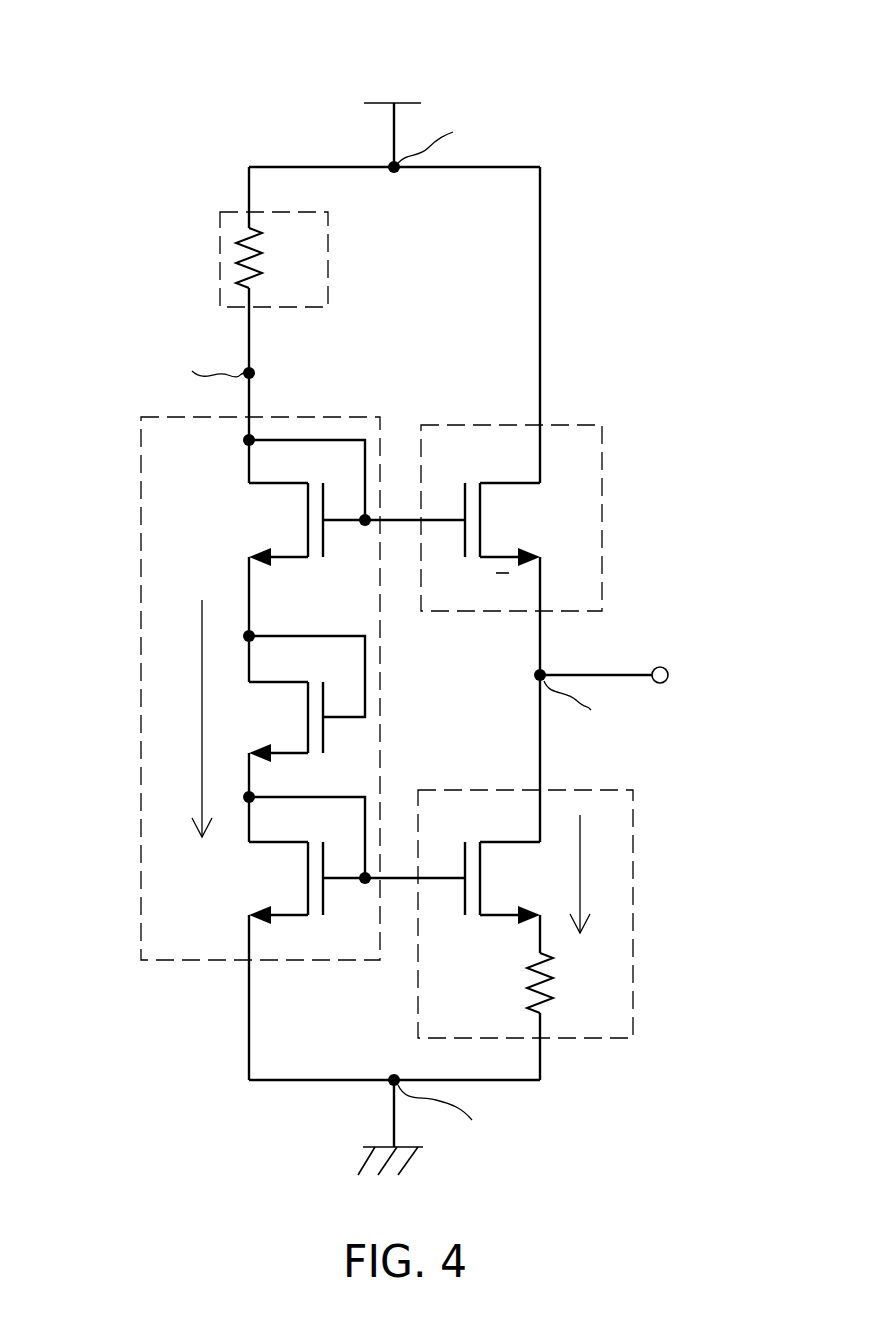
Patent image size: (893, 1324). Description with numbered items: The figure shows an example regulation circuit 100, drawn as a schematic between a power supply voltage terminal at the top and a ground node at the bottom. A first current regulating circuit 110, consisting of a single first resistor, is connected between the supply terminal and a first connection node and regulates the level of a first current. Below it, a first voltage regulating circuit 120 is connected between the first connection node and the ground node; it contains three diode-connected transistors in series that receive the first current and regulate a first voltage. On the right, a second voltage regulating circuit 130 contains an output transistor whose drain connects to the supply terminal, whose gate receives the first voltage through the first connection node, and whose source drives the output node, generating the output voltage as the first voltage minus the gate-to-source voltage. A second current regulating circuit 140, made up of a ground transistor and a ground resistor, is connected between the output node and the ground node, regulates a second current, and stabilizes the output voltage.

The regulation circuit 100 is at (416, 26).
The first current regulating circuit 110 is at (220, 258).
The first voltage regulating circuit 120 is at (141, 697).
The second voltage regulating circuit 130 is at (602, 518).
The second current regulating circuit 140 is at (633, 932).